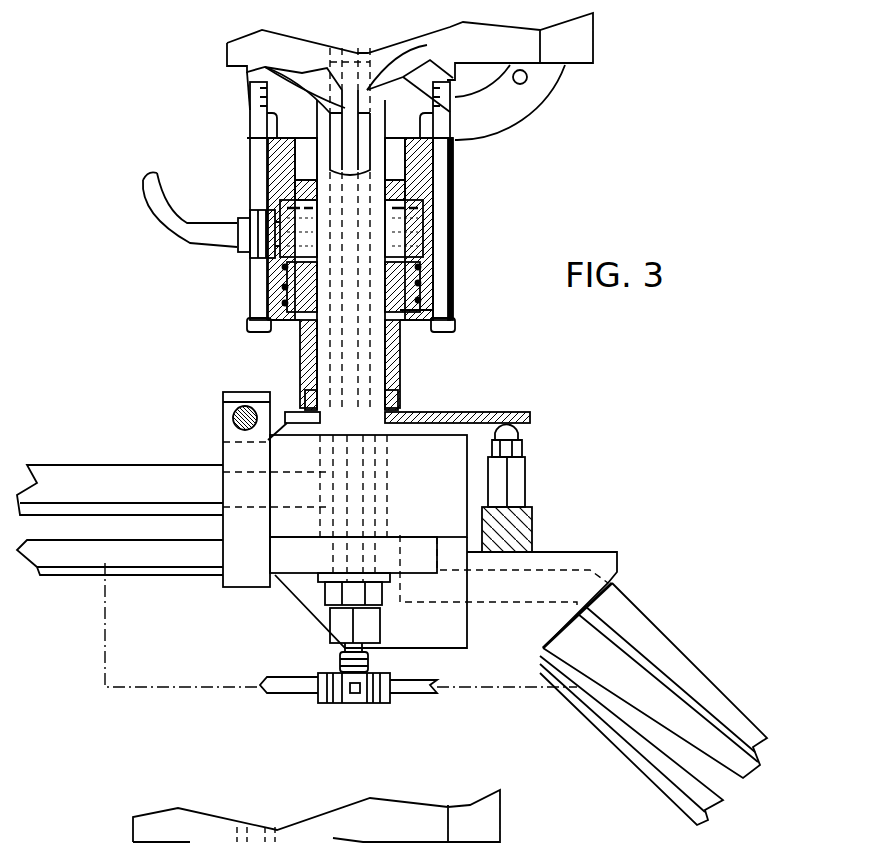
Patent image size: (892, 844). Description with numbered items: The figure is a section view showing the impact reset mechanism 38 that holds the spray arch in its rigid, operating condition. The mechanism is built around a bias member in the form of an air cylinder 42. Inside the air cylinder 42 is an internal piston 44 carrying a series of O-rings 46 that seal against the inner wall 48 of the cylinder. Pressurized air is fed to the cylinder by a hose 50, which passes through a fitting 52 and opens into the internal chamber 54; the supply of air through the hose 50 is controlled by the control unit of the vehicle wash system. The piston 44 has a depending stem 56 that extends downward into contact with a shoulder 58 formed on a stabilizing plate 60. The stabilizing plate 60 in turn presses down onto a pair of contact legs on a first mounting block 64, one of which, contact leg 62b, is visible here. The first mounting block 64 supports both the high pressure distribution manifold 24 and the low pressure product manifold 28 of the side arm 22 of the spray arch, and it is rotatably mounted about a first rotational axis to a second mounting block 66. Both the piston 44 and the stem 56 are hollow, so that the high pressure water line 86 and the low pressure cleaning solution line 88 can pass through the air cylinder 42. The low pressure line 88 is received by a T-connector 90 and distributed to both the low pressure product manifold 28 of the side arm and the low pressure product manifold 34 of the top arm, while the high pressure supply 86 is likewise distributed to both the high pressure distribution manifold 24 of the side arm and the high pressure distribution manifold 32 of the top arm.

The side arm 22 is at (735, 683).
The high pressure distribution manifold 24 is at (660, 645).
The low pressure product manifold 28 is at (665, 767).
The high pressure distribution manifold 32 is at (88, 476).
The low pressure product manifold 34 is at (44, 572).
The impact reset mechanism 38 is at (553, 227).
The air cylinder 42 is at (420, 192).
The internal piston 44 is at (290, 335).
The O-rings 46 is at (420, 267).
The inner wall 48 is at (423, 228).
The hose 50 is at (152, 195).
The fitting 52 is at (258, 212).
The internal chamber 54 is at (290, 240).
The depending stem 56 is at (400, 355).
The shoulder 58 is at (412, 415).
The stabilizing plate 60 is at (472, 415).
The contact leg 62b is at (518, 487).
The first mounting block 64 is at (570, 552).
The second mounting block 66 is at (445, 637).
The high pressure water line 86 is at (380, 112).
The low pressure cleaning solution line 88 is at (265, 67).
The T-connector 90 is at (333, 700).